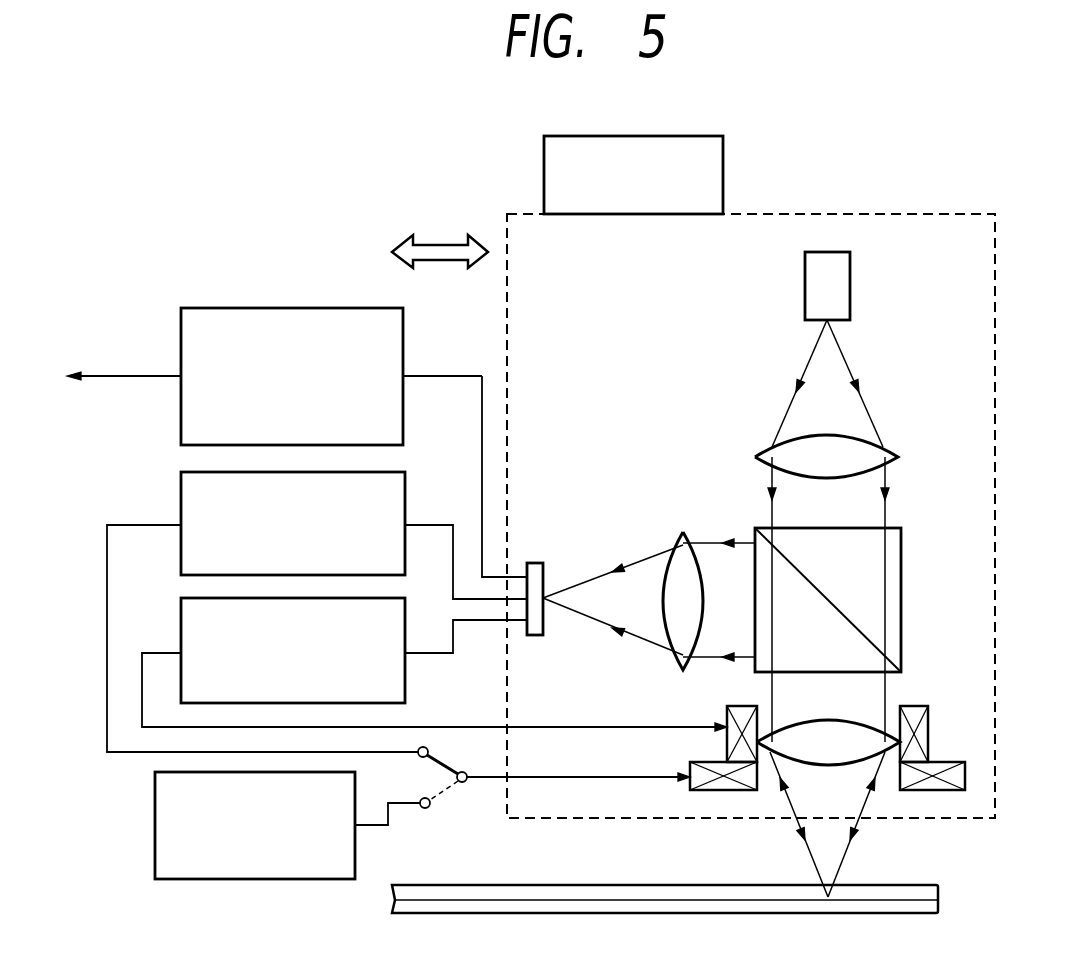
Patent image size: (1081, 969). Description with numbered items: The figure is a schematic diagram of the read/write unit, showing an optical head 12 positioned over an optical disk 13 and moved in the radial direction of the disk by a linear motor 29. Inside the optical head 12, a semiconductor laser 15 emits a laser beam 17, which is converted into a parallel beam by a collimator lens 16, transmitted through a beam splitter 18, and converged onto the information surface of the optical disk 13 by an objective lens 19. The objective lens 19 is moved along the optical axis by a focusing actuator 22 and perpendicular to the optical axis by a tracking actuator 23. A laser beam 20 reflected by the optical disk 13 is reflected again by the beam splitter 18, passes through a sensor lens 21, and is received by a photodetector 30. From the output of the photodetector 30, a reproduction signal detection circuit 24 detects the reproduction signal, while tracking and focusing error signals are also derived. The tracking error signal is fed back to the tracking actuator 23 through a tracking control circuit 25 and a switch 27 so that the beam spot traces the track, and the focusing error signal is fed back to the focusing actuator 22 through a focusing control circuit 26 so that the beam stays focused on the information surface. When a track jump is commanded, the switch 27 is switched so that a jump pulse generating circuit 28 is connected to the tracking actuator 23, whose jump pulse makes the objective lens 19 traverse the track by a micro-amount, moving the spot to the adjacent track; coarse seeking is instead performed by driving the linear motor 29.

The optical head 12 is at (995, 287).
The optical disk 13 is at (895, 887).
The semiconductor laser 15 is at (850, 268).
The collimator lens 16 is at (898, 450).
The laser beam 17 is at (850, 415).
The beam splitter 18 is at (901, 578).
The objective lens 19 is at (855, 728).
The laser beam reflected by the optical disk 20 is at (718, 560).
The sensor lens 21 is at (680, 537).
The focusing actuator 22 is at (727, 710).
The tracking actuator 23 is at (708, 790).
The reproduction signal detection circuit 24 is at (181, 322).
The tracking control circuit 25 is at (181, 490).
The focusing control circuit 26 is at (405, 683).
The switch 27 is at (443, 795).
The jump pulse generating circuit 28 is at (153, 800).
The linear motor 29 is at (723, 167).
The photodetector 30 is at (533, 563).